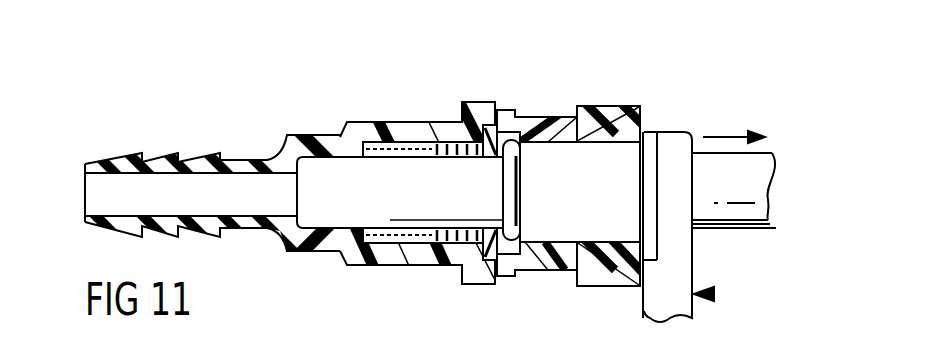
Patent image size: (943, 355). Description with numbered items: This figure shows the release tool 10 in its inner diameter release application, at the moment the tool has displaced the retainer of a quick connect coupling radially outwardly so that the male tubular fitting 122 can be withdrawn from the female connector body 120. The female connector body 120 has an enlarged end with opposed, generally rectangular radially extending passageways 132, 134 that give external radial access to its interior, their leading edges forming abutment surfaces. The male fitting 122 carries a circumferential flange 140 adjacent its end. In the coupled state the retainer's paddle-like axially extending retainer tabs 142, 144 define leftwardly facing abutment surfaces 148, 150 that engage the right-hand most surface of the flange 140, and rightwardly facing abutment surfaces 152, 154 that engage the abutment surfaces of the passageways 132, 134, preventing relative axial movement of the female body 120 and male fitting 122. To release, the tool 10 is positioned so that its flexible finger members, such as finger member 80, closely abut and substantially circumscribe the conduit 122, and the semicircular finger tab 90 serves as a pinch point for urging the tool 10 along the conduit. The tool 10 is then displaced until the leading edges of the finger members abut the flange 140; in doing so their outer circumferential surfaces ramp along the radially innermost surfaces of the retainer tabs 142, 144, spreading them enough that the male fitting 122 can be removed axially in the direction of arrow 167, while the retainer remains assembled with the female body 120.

The universal quick connector O.D. release tool 10 is at (712, 294).
The finger member 80 is at (648, 165).
The finger tab 90 is at (658, 170).
The female connector body 120 is at (325, 133).
The male tubular fitting 122 is at (352, 204).
The radially extending passageway 132 is at (505, 108).
The radially extending passageway 134 is at (527, 267).
The circumferential flange 140 is at (503, 188).
The retainer tab 142 is at (549, 125).
The retainer tab 144 is at (543, 246).
The leftwardly facing abutment surface 148 is at (513, 130).
The leftwardly facing abutment surface 150 is at (520, 250).
The rightwardly facing abutment surface 152 is at (574, 108).
The rightwardly facing abutment surface 154 is at (578, 285).
The arrow 167 is at (724, 132).